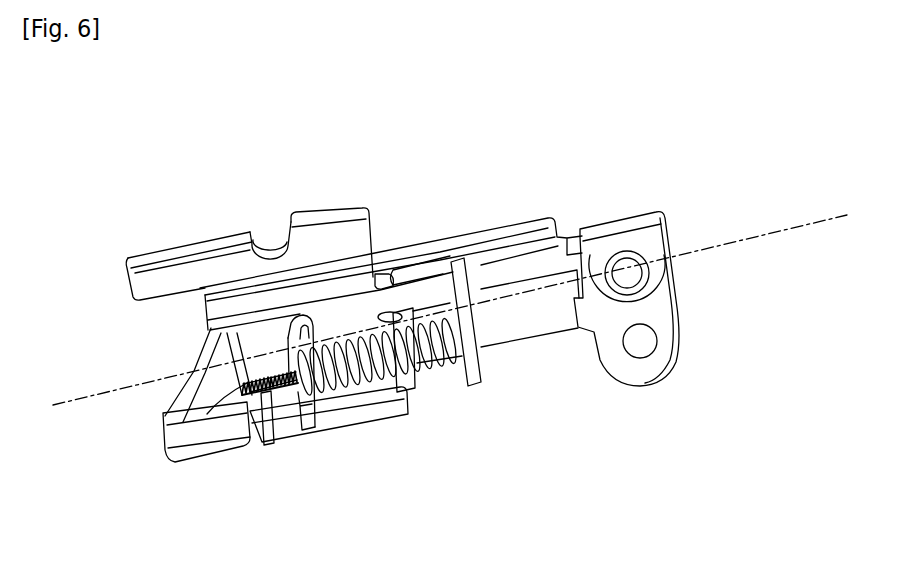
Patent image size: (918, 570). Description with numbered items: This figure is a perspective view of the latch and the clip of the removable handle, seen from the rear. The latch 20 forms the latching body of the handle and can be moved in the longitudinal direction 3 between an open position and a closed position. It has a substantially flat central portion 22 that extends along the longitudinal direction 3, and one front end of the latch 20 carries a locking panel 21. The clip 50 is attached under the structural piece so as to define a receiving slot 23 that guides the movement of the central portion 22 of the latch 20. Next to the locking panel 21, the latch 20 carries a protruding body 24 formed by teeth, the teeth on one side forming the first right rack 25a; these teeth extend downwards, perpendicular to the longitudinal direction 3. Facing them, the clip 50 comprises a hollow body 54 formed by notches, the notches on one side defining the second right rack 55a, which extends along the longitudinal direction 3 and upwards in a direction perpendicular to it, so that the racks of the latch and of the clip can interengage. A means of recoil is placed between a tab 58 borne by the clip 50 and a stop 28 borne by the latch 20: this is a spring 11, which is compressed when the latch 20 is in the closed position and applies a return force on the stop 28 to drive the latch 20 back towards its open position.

The longitudinal direction 3 is at (823, 219).
The latch 20 is at (598, 250).
The central portion 22 is at (455, 247).
The receiving slot 23 is at (383, 275).
The clip 50 is at (325, 290).
The first right rack 25a is at (250, 392).
The protruding body 24 is at (249, 382).
The locking panel 21 is at (168, 378).
The spring 11 is at (430, 385).
The stop 28 is at (478, 378).
The tab 58 is at (337, 420).
The second right rack 55a is at (280, 420).
The hollow body 54 is at (260, 420).